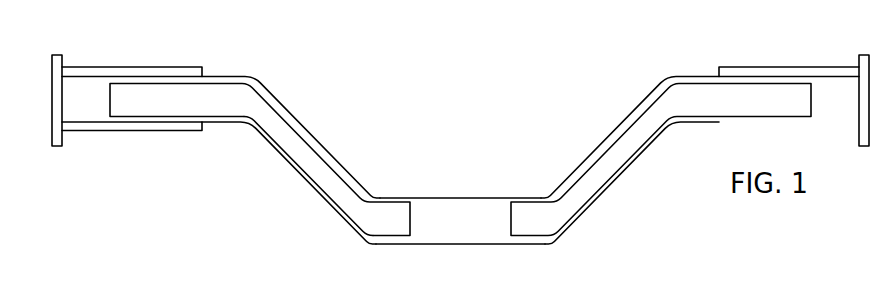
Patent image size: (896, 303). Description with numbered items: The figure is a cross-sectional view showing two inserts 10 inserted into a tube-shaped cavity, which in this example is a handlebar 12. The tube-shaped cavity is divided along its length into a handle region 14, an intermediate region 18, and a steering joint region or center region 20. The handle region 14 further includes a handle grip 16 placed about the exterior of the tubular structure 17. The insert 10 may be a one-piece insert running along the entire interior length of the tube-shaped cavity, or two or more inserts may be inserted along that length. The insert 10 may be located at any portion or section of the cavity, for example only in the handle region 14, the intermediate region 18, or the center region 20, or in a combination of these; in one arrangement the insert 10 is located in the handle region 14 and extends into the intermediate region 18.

The insert 10 is at (291, 142).
The handlebar 12 is at (100, 61).
The handle region 14 is at (137, 133).
The handle grip 16 is at (52, 146).
The tubular structure 17 is at (342, 227).
The intermediate region 18 is at (303, 202).
The center region 20 is at (475, 194).